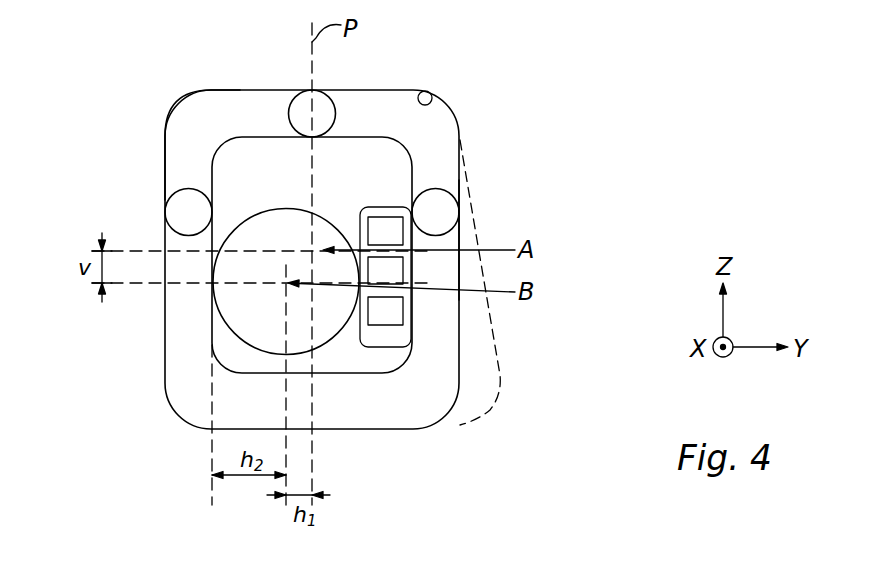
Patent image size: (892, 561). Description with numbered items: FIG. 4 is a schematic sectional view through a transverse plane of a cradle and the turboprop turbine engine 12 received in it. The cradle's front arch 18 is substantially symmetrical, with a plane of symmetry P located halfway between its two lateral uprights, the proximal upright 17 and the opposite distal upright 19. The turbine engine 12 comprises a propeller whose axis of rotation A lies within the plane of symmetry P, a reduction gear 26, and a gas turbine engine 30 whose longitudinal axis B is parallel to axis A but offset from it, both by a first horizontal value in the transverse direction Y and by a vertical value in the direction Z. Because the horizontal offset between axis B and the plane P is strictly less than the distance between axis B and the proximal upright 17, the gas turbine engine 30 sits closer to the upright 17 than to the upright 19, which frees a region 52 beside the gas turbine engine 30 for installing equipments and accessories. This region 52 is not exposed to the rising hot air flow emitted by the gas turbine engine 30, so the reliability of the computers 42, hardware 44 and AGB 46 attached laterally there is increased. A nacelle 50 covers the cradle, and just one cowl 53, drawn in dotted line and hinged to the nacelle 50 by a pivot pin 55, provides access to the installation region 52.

The turbine engine 12 is at (243, 360).
The upright 17 is at (165, 171).
The front arch 18 is at (201, 130).
The upright 19 is at (458, 237).
The reduction gear 26 is at (368, 158).
The gas turbine engine 30 is at (333, 329).
The computers 42 is at (385, 231).
The hardware 44 is at (385, 270).
The AGB 46 is at (385, 311).
The nacelle 50 is at (271, 80).
The region for installing equipments and accessories 52 is at (398, 336).
The cowl 53 is at (497, 397).
The pivot pin 55 is at (418, 101).